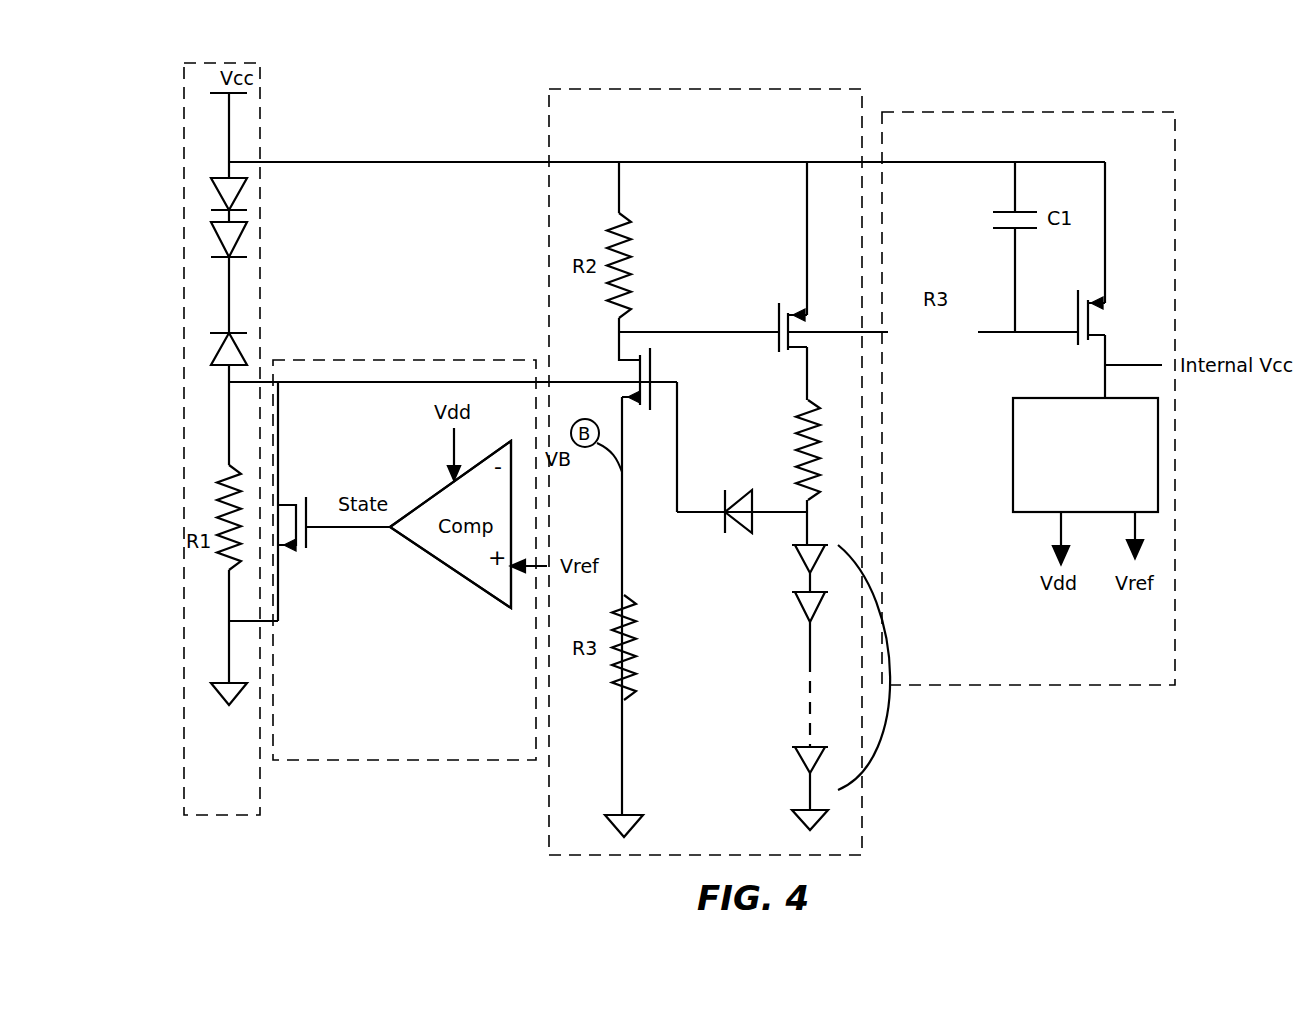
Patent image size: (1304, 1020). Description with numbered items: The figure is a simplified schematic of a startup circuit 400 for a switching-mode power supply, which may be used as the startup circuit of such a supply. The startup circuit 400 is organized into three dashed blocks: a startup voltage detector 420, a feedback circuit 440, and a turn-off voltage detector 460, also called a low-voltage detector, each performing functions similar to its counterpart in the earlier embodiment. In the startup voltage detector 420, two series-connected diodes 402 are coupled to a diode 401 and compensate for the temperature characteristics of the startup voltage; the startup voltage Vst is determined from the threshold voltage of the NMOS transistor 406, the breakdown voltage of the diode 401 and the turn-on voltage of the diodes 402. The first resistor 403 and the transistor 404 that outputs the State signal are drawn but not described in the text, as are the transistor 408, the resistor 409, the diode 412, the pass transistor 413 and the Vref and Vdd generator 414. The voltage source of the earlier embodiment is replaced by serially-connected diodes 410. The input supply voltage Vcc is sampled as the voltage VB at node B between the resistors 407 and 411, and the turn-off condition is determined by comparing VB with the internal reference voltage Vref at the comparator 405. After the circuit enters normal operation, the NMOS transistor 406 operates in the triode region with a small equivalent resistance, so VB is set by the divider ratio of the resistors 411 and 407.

The startup circuit 400 is at (1186, 98).
The diode 401 is at (258, 333).
The series-connected diodes 402 is at (258, 228).
The resistor R1 403 is at (220, 510).
The state transistor 404 is at (302, 482).
The comparator 405 is at (475, 583).
The NMOS transistor 406 is at (615, 363).
The resistor 407 is at (638, 640).
The transistor 408 is at (838, 320).
The resistor 409 is at (827, 452).
The serially-connected diodes 410 is at (890, 617).
The resistor 411 is at (637, 245).
The diode 412 is at (728, 485).
The pass transistor 413 is at (1105, 295).
The Vref and Vdd generator 414 is at (1162, 450).
The startup voltage detector 420 is at (258, 93).
The feedback circuit 440 is at (545, 112).
The turn-off voltage detector 460 is at (430, 762).